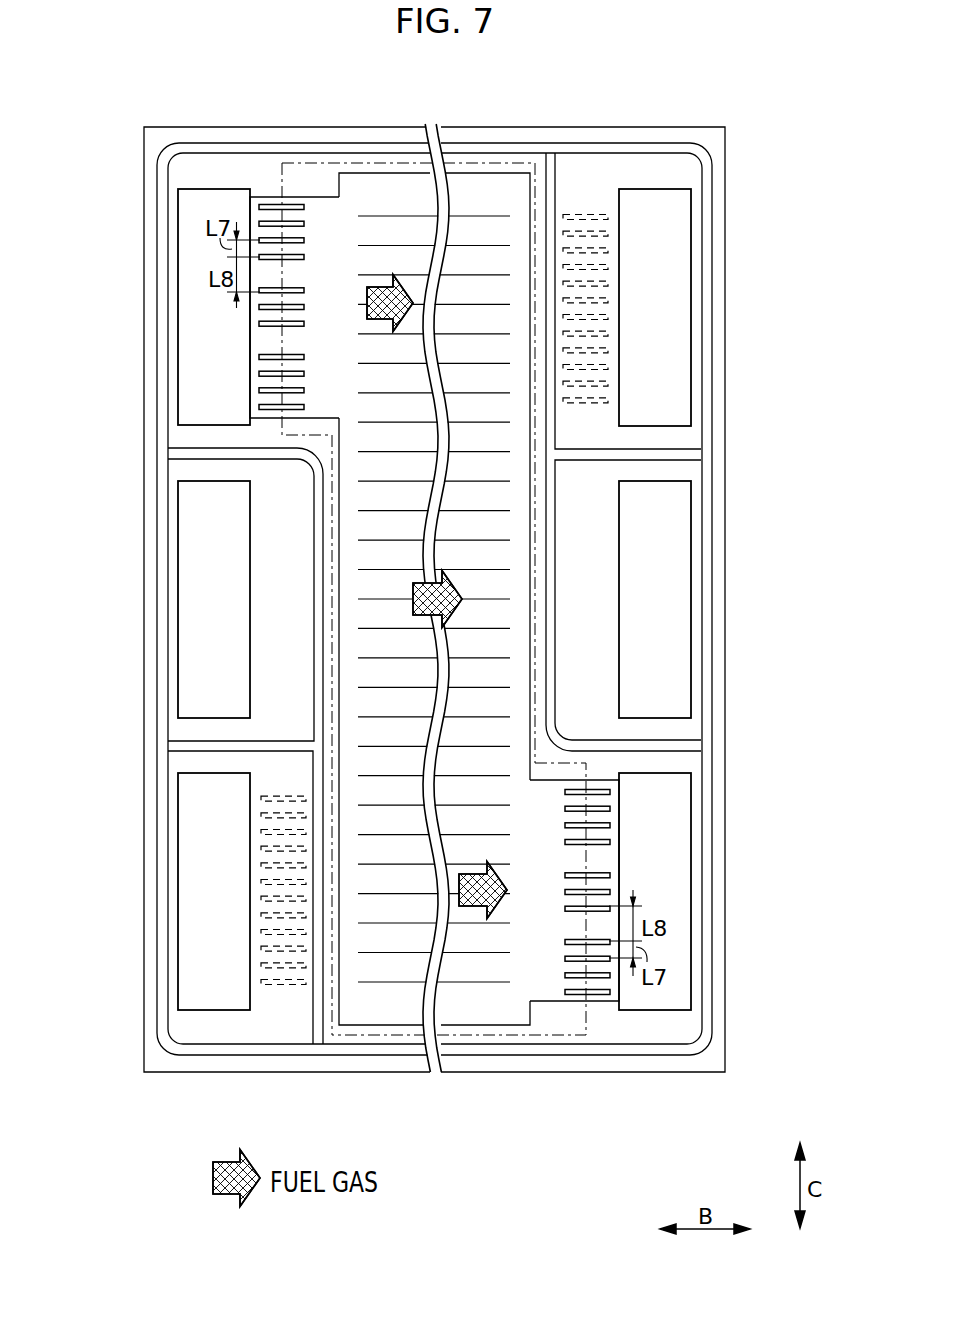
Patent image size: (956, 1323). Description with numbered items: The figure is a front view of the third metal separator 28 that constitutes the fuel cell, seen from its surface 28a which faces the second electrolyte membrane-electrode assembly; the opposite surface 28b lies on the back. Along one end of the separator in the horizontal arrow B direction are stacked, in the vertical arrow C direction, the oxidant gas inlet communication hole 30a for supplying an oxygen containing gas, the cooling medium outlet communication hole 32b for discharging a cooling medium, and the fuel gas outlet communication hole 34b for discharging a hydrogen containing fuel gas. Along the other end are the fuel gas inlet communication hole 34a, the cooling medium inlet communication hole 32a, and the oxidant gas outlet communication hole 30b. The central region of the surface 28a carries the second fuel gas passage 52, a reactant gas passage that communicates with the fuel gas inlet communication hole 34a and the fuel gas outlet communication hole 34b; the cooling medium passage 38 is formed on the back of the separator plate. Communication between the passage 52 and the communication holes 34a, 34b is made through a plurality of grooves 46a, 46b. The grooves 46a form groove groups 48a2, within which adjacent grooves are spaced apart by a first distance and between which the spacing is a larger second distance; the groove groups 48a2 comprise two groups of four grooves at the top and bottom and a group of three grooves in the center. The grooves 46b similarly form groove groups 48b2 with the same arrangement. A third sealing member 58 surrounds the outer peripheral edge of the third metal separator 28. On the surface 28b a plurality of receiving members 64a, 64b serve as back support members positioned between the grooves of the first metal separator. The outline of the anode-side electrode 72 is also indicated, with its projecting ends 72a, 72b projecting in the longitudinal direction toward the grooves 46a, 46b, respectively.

The third metal separator 28 is at (538, 64).
The surface of the third metal separator 28a is at (184, 1062).
The surface of the third metal separator 28b is at (255, 1062).
The oxidant gas inlet communication hole 30a is at (682, 296).
The oxidant gas outlet communication hole 30b is at (187, 856).
The cooling medium inlet communication hole 32a is at (190, 572).
The cooling medium outlet communication hole 32b is at (682, 560).
The fuel gas inlet communication hole 34a is at (187, 285).
The fuel gas outlet communication hole 34b is at (681, 880).
The cooling medium passage 38 is at (389, 582).
The grooves 46a is at (297, 206).
The grooves 46b is at (600, 876).
The groove groups 48a2 is at (270, 204).
The groove groups 48b2 is at (603, 997).
The second fuel gas passage 52 is at (389, 620).
The third sealing member 58 is at (699, 127).
The receiving members 64a is at (608, 266).
The receiving members 64b is at (284, 932).
The anode-side electrode 72 is at (390, 163).
The projecting end 72a is at (297, 438).
The projecting end 72b is at (586, 760).